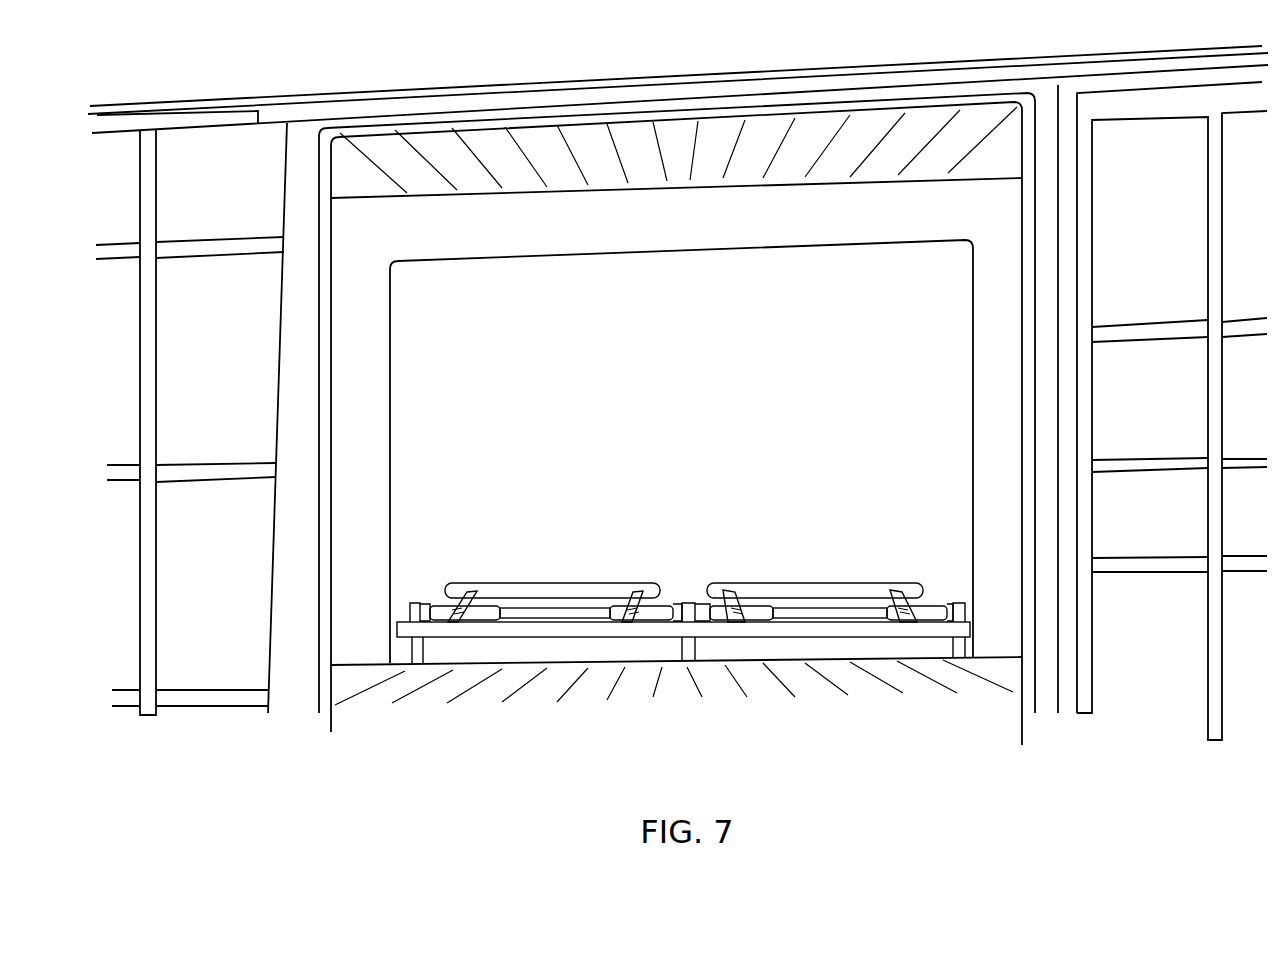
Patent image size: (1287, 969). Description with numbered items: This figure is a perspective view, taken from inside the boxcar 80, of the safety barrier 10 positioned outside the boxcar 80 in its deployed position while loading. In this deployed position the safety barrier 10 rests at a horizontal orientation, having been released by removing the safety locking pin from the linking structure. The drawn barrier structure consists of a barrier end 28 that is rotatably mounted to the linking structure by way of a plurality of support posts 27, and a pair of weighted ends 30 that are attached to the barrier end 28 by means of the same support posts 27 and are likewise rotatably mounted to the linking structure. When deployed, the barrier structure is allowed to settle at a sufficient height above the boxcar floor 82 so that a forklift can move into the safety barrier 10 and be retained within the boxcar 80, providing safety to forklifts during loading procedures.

The safety barrier 10 is at (683, 584).
The support posts 27 is at (461, 590).
The barrier end 28 is at (408, 628).
The weighted ends 30 is at (598, 592).
The boxcar 80 is at (308, 119).
The boxcar floor 82 is at (853, 678).